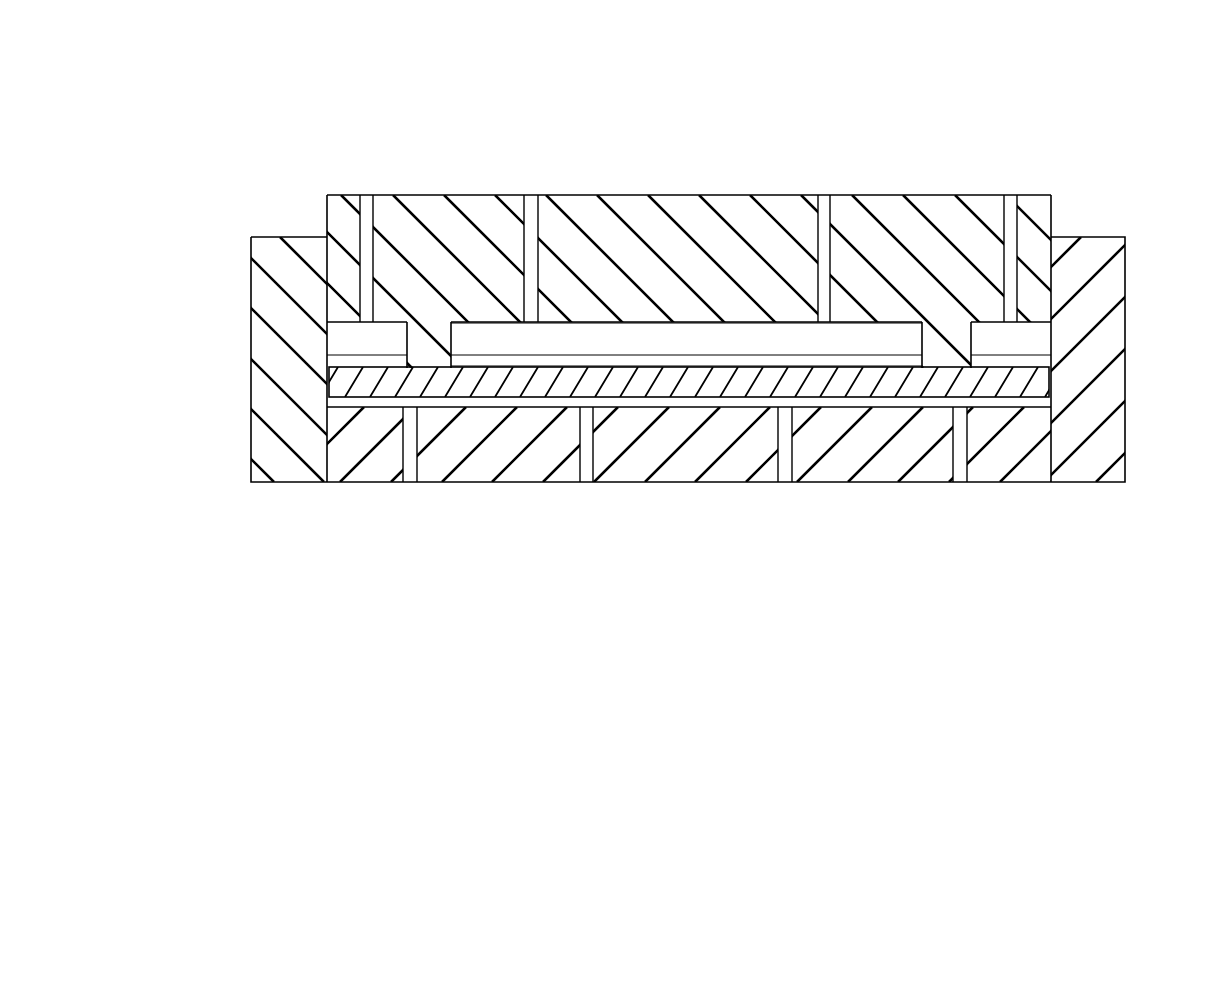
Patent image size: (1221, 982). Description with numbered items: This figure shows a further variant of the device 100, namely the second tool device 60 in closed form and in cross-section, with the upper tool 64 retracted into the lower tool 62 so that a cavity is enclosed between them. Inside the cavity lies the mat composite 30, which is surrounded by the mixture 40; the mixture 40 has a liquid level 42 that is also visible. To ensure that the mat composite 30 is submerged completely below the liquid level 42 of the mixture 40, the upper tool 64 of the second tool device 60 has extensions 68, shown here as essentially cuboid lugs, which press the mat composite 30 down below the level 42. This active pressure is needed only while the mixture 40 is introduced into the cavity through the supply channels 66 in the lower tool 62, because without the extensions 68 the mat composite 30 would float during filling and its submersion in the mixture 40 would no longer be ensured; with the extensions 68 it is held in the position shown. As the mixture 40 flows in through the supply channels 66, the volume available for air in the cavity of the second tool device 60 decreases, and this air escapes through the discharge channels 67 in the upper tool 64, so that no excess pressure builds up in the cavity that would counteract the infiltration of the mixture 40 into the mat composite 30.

The device 100 is at (342, 82).
The second tool device 60 is at (769, 145).
The upper tool 64 is at (700, 212).
The discharge channels 67 is at (1008, 196).
The extension 68 is at (975, 350).
The liquid level of the mixture 42 is at (1030, 352).
The mat composite 30 is at (1015, 393).
The mixture 40 is at (766, 407).
The lower tool 62 is at (1062, 462).
The supply channels 66 is at (920, 558).